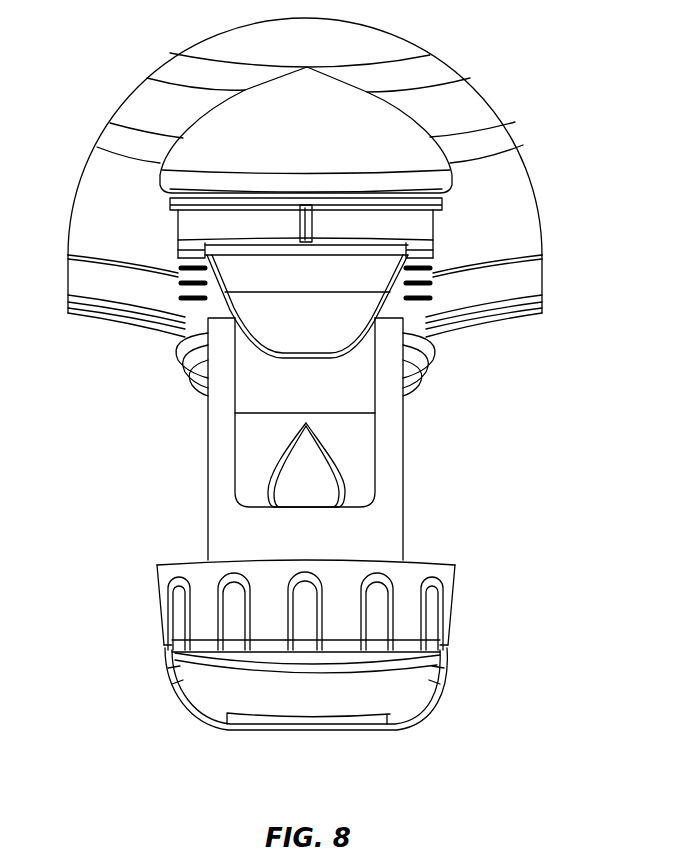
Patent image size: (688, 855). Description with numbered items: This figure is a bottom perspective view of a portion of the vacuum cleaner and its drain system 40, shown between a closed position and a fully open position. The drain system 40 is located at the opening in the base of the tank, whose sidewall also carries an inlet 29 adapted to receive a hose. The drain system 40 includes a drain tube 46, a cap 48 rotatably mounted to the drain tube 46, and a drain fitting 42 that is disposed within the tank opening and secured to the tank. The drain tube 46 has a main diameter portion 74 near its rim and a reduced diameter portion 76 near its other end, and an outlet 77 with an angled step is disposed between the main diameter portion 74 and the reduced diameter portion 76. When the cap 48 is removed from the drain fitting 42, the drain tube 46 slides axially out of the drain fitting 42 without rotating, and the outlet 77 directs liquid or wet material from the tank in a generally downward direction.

The drain system 40 is at (314, 387).
The drain tube 46 is at (490, 442).
The inlet 29 is at (412, 380).
The drain fitting 42 is at (455, 289).
The main diameter portion 74 is at (402, 478).
The reduced diameter portion 76 is at (328, 458).
The outlet 77 is at (355, 489).
The cap 48 is at (455, 720).